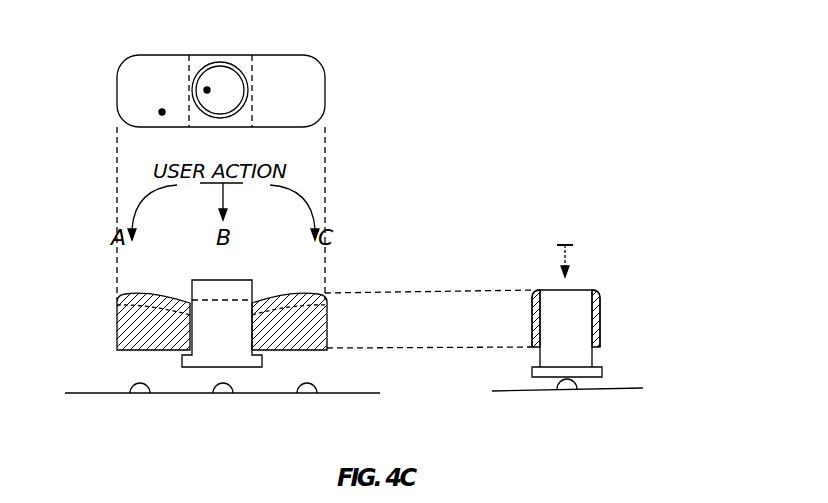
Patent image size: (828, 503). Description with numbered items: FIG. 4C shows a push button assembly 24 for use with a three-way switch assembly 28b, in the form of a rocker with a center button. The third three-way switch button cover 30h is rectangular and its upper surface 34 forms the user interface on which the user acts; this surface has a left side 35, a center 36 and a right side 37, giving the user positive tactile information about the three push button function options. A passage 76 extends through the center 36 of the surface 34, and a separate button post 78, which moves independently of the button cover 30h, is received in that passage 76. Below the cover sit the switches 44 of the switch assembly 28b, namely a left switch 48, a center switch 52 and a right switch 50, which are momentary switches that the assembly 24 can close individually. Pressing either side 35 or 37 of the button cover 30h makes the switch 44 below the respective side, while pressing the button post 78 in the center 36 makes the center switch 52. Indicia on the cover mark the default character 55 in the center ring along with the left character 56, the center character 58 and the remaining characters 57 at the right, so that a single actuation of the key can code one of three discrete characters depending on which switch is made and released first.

The push button assembly 24 is at (420, 108).
The three-way switch assembly 28b is at (362, 393).
The third three-way switch button cover 30h is at (326, 80).
The upper surface 34 is at (162, 115).
The left side 35 is at (120, 82).
The center 36 is at (193, 78).
The right side 37 is at (302, 293).
The switches 44 is at (122, 407).
The left switch 48 is at (132, 386).
The right switch 50 is at (318, 386).
The center switch 52 is at (213, 386).
The default characters 55 is at (222, 63).
The left character 56 is at (145, 82).
The indicia B 57 is at (273, 82).
The center character 58 is at (303, 82).
The passage 76 is at (250, 322).
The button post 78 is at (207, 93).